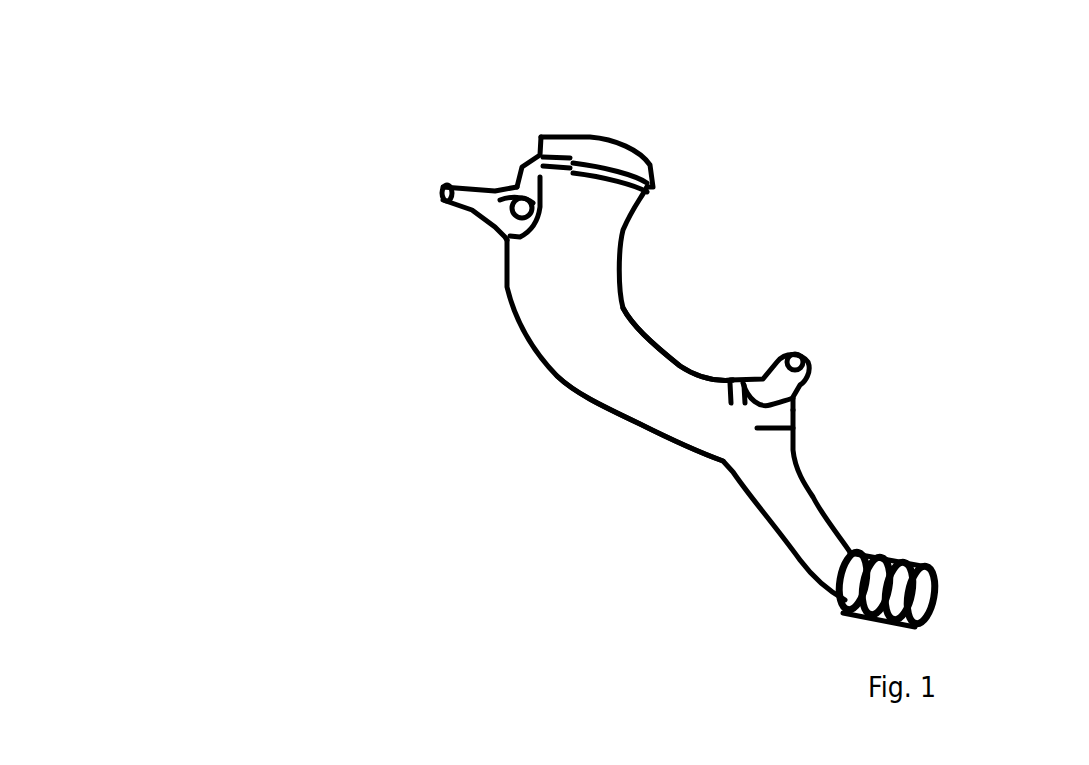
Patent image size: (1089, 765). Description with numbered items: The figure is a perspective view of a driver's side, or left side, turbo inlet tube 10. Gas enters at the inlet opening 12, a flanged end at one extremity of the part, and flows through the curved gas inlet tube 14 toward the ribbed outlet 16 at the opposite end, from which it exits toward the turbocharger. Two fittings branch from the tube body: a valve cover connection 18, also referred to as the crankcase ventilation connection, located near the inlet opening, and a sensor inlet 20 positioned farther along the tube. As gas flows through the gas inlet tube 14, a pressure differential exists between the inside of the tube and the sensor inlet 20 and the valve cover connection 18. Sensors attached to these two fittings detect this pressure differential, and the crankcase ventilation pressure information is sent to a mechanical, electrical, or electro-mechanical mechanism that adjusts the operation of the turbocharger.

The left side turbo inlet tube 10 is at (335, 169).
The inlet opening 12 is at (636, 126).
The gas inlet tube 14 is at (687, 329).
The outlet 16 is at (954, 605).
The valve cover connection 18 is at (448, 171).
The sensor inlet 20 is at (828, 357).